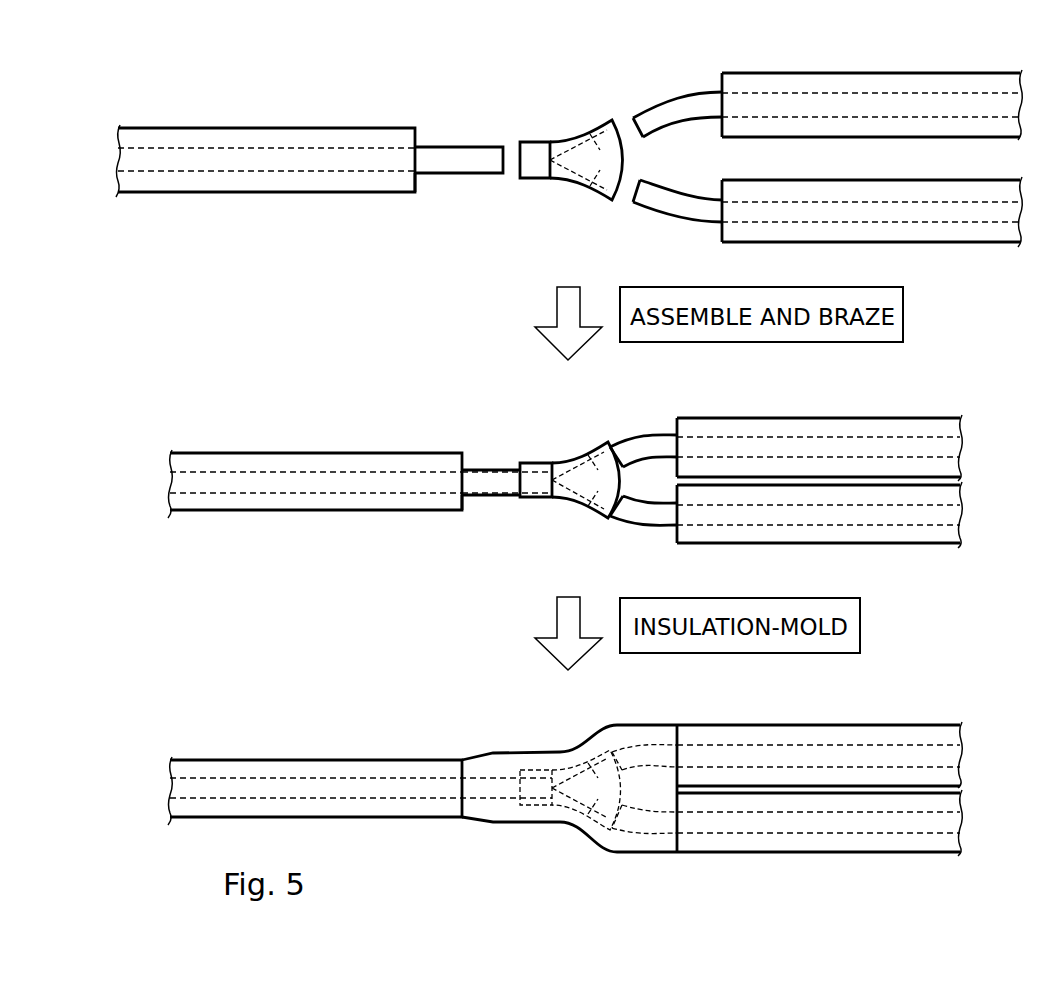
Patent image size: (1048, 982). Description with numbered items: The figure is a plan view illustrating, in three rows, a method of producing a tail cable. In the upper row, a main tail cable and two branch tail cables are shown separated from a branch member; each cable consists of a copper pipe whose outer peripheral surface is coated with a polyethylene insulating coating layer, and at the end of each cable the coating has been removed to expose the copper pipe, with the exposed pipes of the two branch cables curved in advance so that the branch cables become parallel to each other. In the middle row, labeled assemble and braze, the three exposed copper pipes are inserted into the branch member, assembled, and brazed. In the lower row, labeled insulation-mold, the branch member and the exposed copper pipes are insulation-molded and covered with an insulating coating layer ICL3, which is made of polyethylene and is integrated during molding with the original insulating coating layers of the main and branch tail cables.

The insulating coating layer ICL3 is at (495, 756).